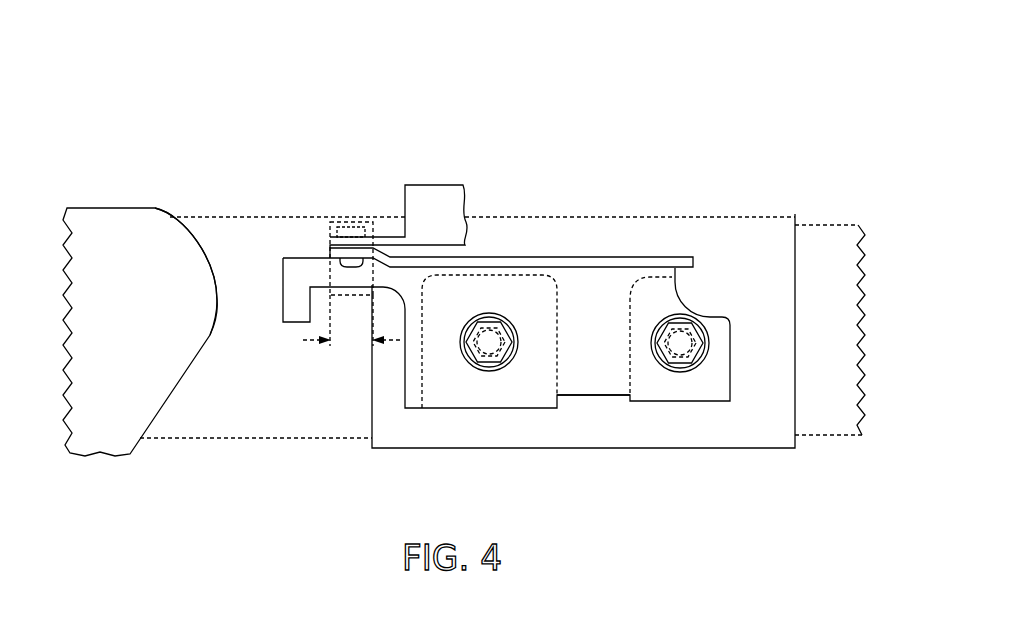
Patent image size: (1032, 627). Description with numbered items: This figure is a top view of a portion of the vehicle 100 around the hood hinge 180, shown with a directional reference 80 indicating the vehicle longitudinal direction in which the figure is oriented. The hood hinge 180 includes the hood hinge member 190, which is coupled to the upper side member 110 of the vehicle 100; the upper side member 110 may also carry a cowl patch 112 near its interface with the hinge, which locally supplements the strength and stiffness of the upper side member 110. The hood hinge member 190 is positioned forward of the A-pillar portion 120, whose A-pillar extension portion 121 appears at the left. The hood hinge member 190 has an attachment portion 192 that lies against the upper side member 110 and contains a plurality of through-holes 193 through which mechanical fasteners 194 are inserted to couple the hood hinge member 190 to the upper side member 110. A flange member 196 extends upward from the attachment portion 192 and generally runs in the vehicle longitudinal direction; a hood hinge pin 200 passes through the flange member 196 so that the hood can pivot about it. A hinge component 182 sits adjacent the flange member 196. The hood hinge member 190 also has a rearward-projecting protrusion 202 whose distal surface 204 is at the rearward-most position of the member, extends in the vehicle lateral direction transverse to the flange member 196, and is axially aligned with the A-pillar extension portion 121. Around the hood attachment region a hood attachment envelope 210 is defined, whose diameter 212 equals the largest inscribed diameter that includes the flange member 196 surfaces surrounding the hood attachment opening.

The longitudinal direction 80 is at (492, 135).
The vehicle 100 is at (753, 112).
The upper side member 110 is at (825, 445).
The cowl patch 112 is at (752, 448).
The A-pillar portion 120 is at (175, 398).
The A-pillar extension portion 121 is at (218, 304).
The hood hinge 180 is at (375, 150).
The sensor housing 182 is at (442, 185).
The hood hinge member 190 is at (663, 248).
The attachment portion 192 is at (587, 395).
The through-holes 193 is at (472, 358).
The mechanical fasteners 194 is at (488, 365).
The flange member 196 is at (533, 258).
The hood hinge pin 200 is at (352, 222).
The rearward-projecting protrusion 202 is at (273, 258).
The distal surface 204 is at (283, 315).
The hood attachment envelope 210 is at (327, 220).
The diameter 212 is at (352, 343).